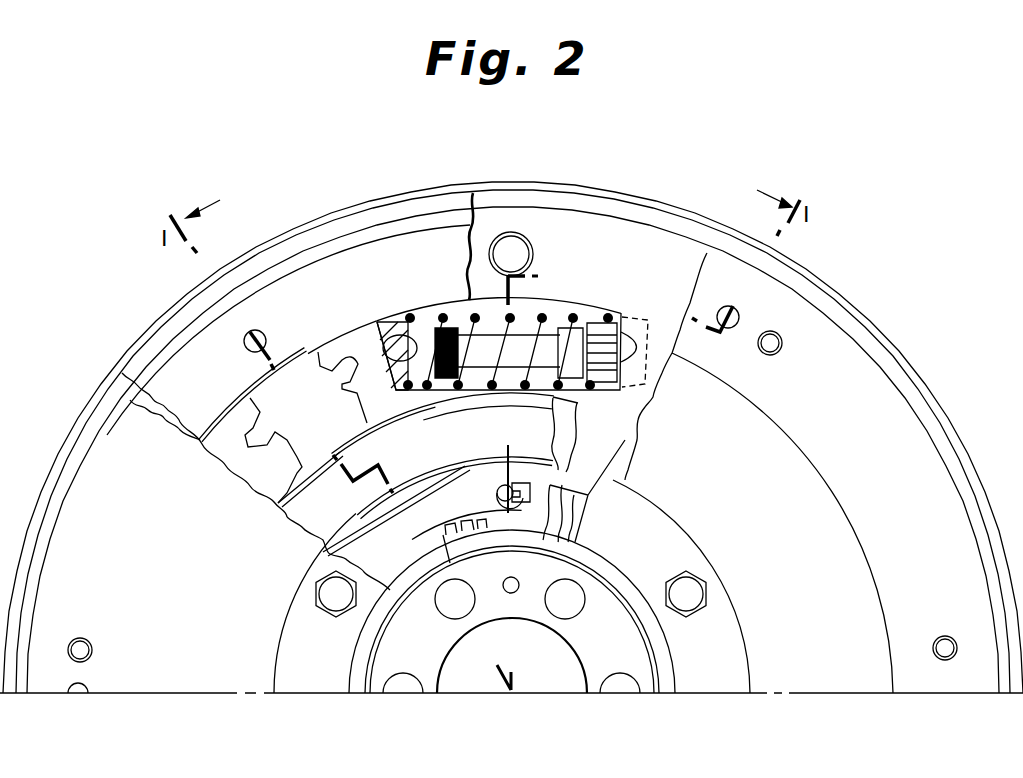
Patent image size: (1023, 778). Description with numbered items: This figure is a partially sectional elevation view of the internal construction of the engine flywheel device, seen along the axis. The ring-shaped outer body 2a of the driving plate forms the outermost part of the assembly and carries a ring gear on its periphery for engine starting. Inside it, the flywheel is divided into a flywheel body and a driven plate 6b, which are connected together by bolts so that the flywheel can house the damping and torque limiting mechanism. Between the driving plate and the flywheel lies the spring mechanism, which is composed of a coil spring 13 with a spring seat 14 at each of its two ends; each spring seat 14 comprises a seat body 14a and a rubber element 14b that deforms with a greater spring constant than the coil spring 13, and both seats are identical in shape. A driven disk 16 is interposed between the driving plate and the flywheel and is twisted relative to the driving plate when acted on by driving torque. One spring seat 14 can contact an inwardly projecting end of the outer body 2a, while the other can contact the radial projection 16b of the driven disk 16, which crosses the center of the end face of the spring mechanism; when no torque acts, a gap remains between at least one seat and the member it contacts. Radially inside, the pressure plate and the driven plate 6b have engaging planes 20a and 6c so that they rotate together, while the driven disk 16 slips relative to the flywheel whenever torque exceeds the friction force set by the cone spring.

The outer body 2a is at (440, 245).
The seat body 14a is at (418, 300).
The rubber element 14b is at (460, 303).
The coil spring 13 is at (548, 300).
The spring seat 14 is at (617, 305).
The radial projection 16b is at (305, 370).
The driven disk 16 is at (563, 437).
The plane 20a is at (402, 487).
The driven plate 6b is at (312, 512).
The plane 6c is at (312, 540).